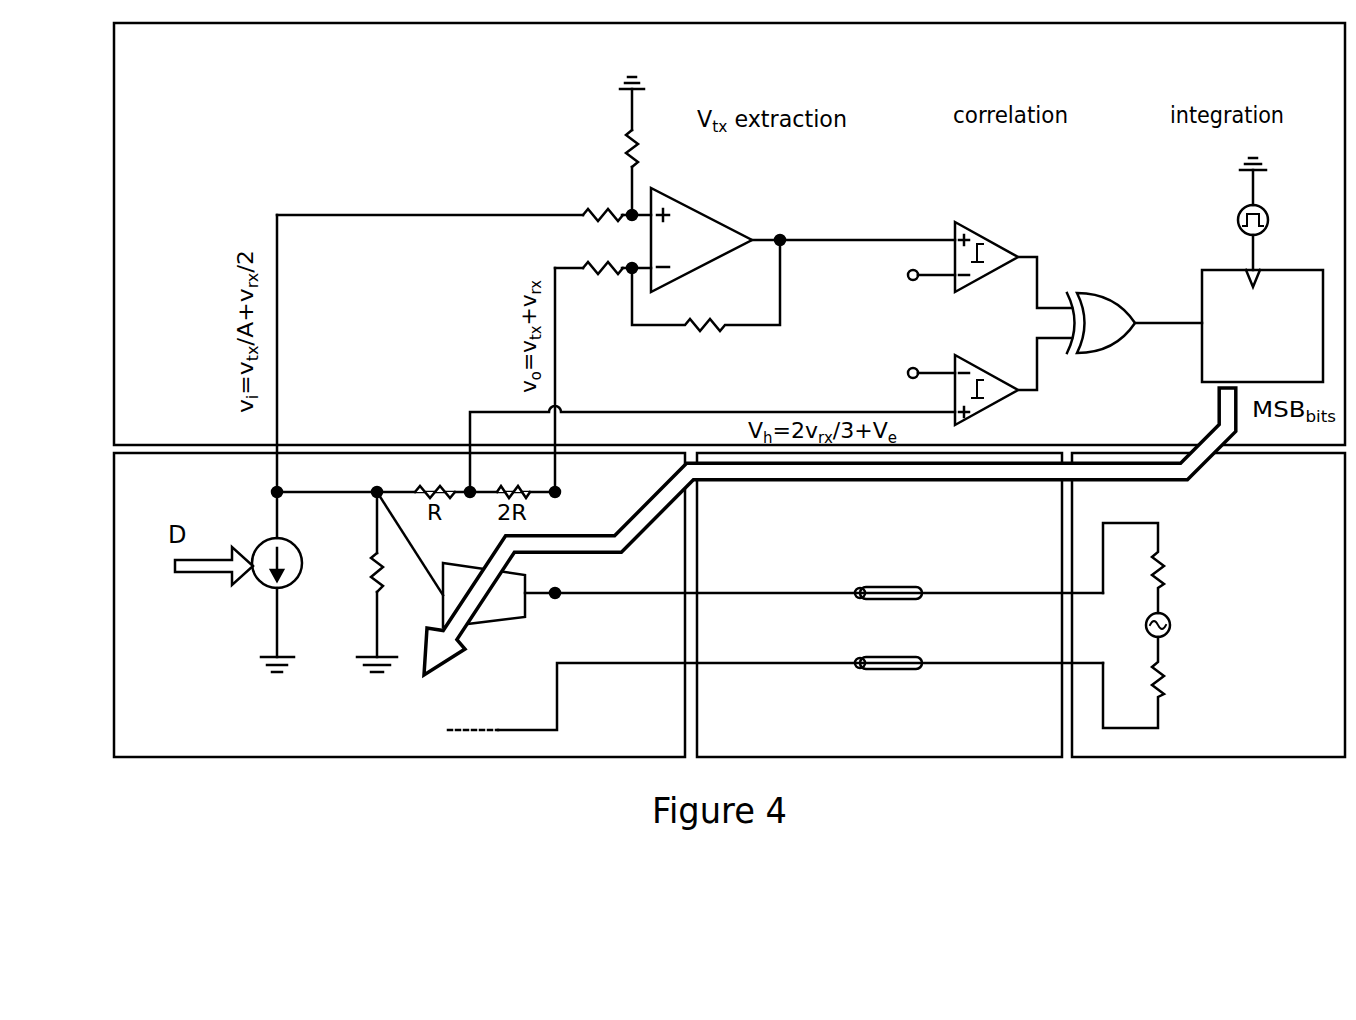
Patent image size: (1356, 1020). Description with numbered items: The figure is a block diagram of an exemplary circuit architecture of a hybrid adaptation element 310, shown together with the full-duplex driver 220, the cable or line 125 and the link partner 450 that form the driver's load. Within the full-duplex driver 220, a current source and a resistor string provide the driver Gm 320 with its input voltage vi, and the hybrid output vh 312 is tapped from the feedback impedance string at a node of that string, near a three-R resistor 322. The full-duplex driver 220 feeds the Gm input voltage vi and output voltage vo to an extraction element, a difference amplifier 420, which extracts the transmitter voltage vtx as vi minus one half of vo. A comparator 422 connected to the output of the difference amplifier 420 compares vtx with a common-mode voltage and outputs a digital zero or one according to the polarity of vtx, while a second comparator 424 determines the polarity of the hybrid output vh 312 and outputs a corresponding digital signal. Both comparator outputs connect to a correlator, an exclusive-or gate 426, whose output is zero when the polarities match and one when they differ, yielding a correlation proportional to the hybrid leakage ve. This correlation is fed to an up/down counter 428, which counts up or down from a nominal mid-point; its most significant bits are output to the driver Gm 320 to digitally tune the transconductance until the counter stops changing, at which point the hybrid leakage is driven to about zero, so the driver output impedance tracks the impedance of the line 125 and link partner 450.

The hybrid adaptation element 310 is at (1116, 66).
The difference amplifier 420 is at (700, 213).
The comparator 422 is at (1012, 223).
The second comparator 424 is at (1000, 402).
The exclusive-or (XOR) gate 426 is at (1090, 296).
The up/down counter 428 is at (1295, 271).
The hybrid output vh 312 is at (470, 492).
The 3R resistor 322 is at (386, 577).
The driver Gm 320 is at (517, 620).
The full-duplex driver 220 is at (370, 725).
The line 125 is at (992, 733).
The link partner 450 is at (1287, 733).